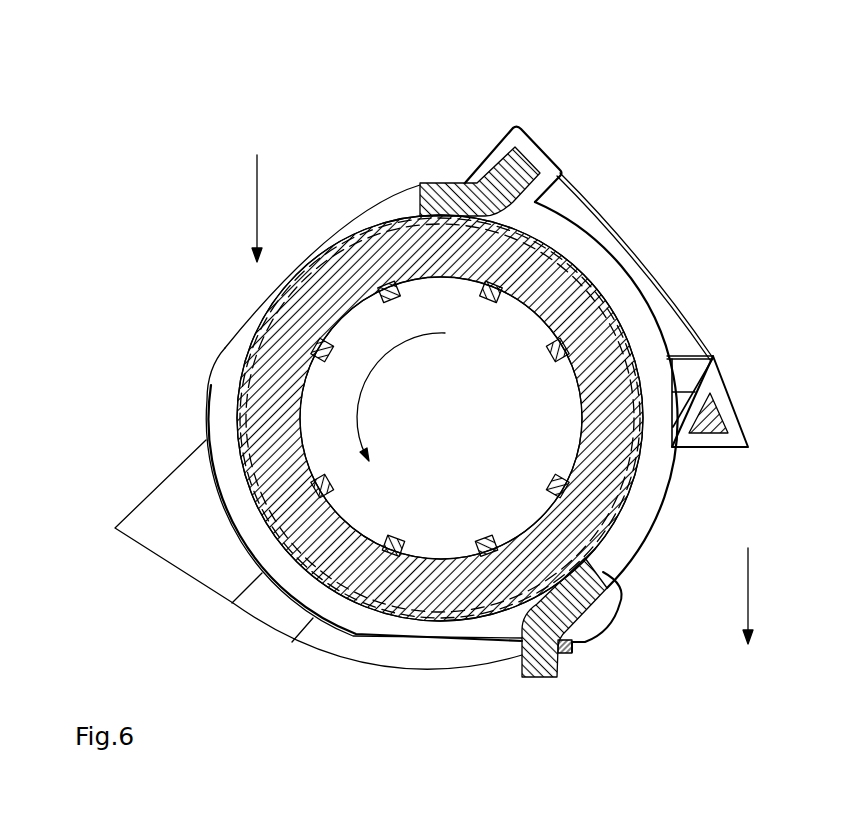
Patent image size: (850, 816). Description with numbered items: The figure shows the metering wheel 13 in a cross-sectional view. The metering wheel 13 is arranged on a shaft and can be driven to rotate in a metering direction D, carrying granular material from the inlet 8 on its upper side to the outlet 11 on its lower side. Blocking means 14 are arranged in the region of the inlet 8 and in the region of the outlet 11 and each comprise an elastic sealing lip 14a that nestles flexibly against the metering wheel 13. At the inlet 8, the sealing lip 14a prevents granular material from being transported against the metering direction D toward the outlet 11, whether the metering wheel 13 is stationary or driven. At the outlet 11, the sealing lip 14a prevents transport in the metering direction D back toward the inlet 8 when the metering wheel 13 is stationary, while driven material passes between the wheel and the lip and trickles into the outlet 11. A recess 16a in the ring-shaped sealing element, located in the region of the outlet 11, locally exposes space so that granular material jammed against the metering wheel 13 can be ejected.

The inlet 8 is at (257, 198).
The outlet 11 is at (748, 593).
The metering wheel 13 is at (603, 307).
The blocking means 14 is at (486, 128).
The sealing lip 14a is at (440, 198).
The recess 16a is at (645, 501).
The metering direction D is at (373, 370).